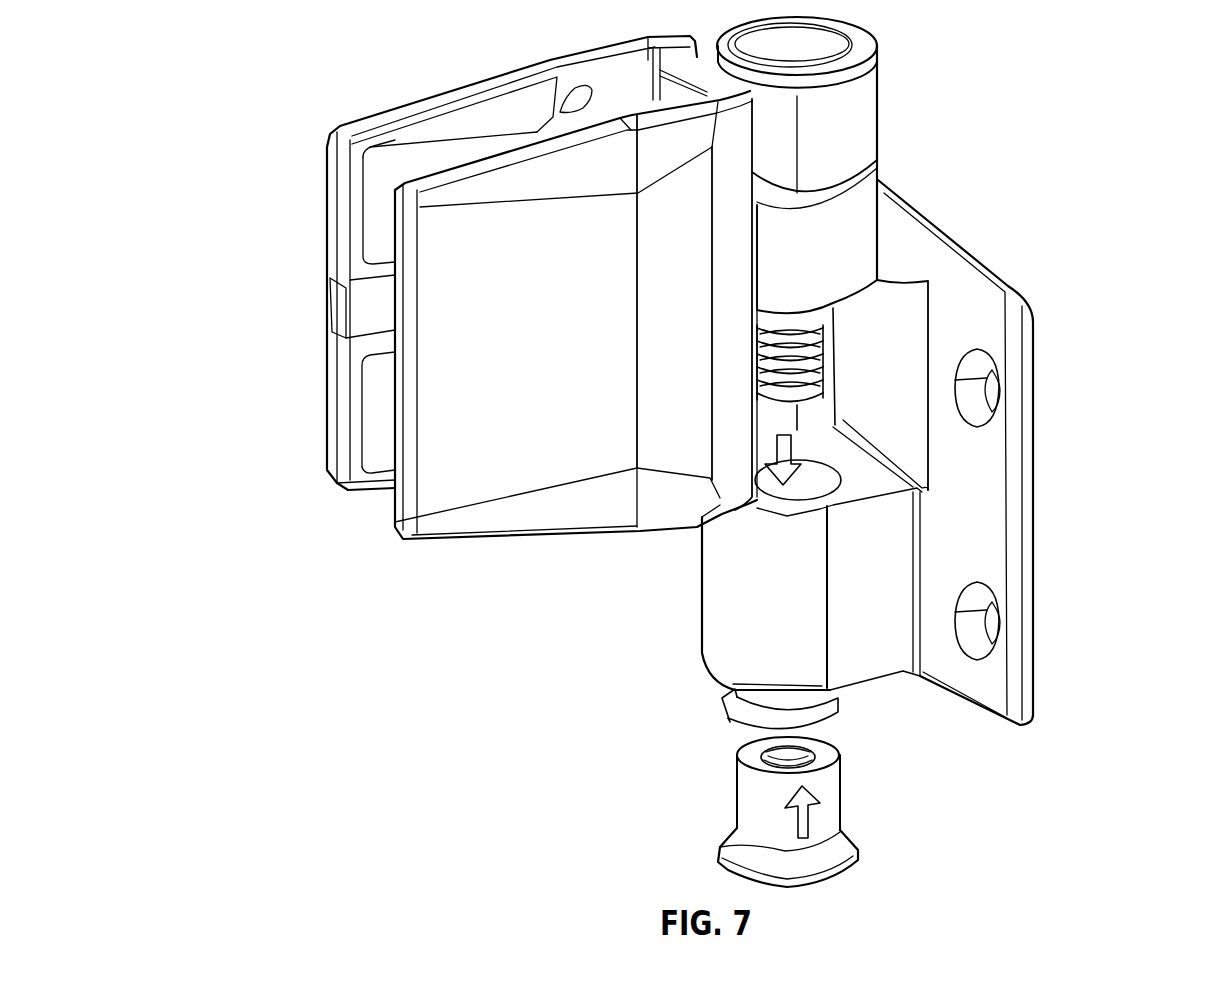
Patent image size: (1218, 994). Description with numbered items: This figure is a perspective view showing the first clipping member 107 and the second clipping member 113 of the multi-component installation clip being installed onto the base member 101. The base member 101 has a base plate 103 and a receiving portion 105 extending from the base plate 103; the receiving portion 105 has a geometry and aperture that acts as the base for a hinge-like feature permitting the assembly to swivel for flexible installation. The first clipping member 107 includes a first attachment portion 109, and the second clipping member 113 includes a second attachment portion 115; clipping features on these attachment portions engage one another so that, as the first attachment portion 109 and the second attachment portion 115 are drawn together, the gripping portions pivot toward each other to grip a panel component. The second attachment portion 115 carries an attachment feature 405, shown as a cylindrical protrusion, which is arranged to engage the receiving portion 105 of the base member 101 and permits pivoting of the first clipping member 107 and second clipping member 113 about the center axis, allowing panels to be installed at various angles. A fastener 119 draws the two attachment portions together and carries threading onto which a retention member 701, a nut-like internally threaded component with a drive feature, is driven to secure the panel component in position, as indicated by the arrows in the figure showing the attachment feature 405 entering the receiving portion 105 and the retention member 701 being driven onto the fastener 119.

The base member 101 is at (702, 452).
The base plate 103 is at (983, 522).
The receiving portion 105 is at (728, 647).
The first clipping member 107 is at (520, 497).
The first attachment portion 109 is at (840, 137).
The second clipping member 113 is at (375, 217).
The second attachment portion 115 is at (840, 233).
The fastener 119 is at (832, 380).
The attachment feature 405 is at (817, 319).
The retention member 701 is at (755, 790).